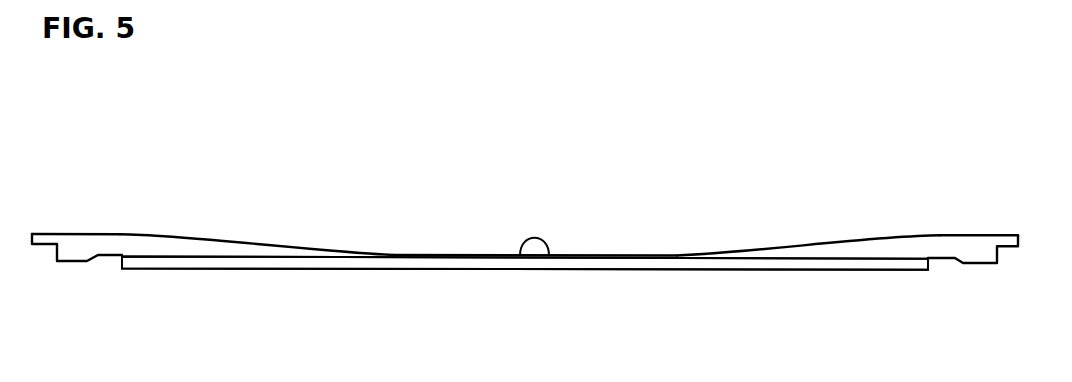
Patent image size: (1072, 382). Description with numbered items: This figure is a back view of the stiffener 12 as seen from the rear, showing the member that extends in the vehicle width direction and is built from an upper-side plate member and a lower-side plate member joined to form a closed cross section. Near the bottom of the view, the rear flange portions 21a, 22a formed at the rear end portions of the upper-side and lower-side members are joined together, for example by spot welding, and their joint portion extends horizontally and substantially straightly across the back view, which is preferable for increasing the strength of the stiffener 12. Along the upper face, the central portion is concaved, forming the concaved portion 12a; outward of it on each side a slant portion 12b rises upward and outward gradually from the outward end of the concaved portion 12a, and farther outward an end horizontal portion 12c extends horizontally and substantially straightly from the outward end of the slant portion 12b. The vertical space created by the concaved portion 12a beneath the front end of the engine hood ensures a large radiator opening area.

The stiffener 12 is at (979, 253).
The concaved portion 12a is at (548, 257).
The slant portion 12b is at (237, 240).
The end horizontal portion 12c is at (153, 233).
The rear flange portion 21a is at (287, 258).
The rear flange portion 22a is at (287, 258).